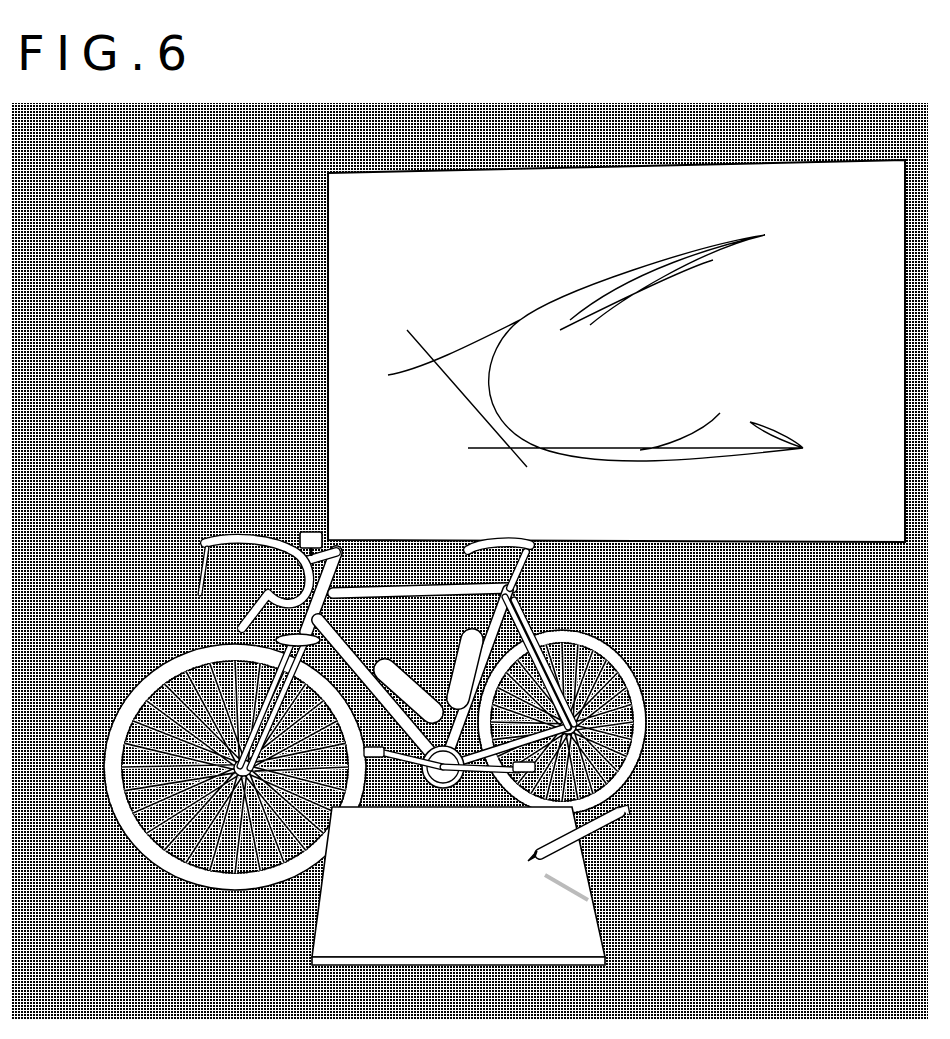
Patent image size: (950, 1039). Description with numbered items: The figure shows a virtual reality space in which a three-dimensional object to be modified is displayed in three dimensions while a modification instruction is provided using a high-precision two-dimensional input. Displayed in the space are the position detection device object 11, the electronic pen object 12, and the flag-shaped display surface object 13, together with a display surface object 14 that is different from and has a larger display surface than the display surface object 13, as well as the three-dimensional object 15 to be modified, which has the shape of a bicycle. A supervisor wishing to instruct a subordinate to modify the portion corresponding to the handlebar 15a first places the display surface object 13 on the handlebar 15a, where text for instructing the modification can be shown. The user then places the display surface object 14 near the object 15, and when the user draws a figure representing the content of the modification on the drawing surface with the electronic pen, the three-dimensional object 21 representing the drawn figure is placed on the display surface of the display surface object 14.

The position detection device object 11 is at (588, 907).
The electronic pen object 12 is at (629, 812).
The display surface object 13 is at (311, 530).
The display surface object 14 is at (826, 544).
The 3D object to be modified 15 is at (648, 700).
The handlebar 15a is at (288, 580).
The 3D object 21 is at (534, 288).